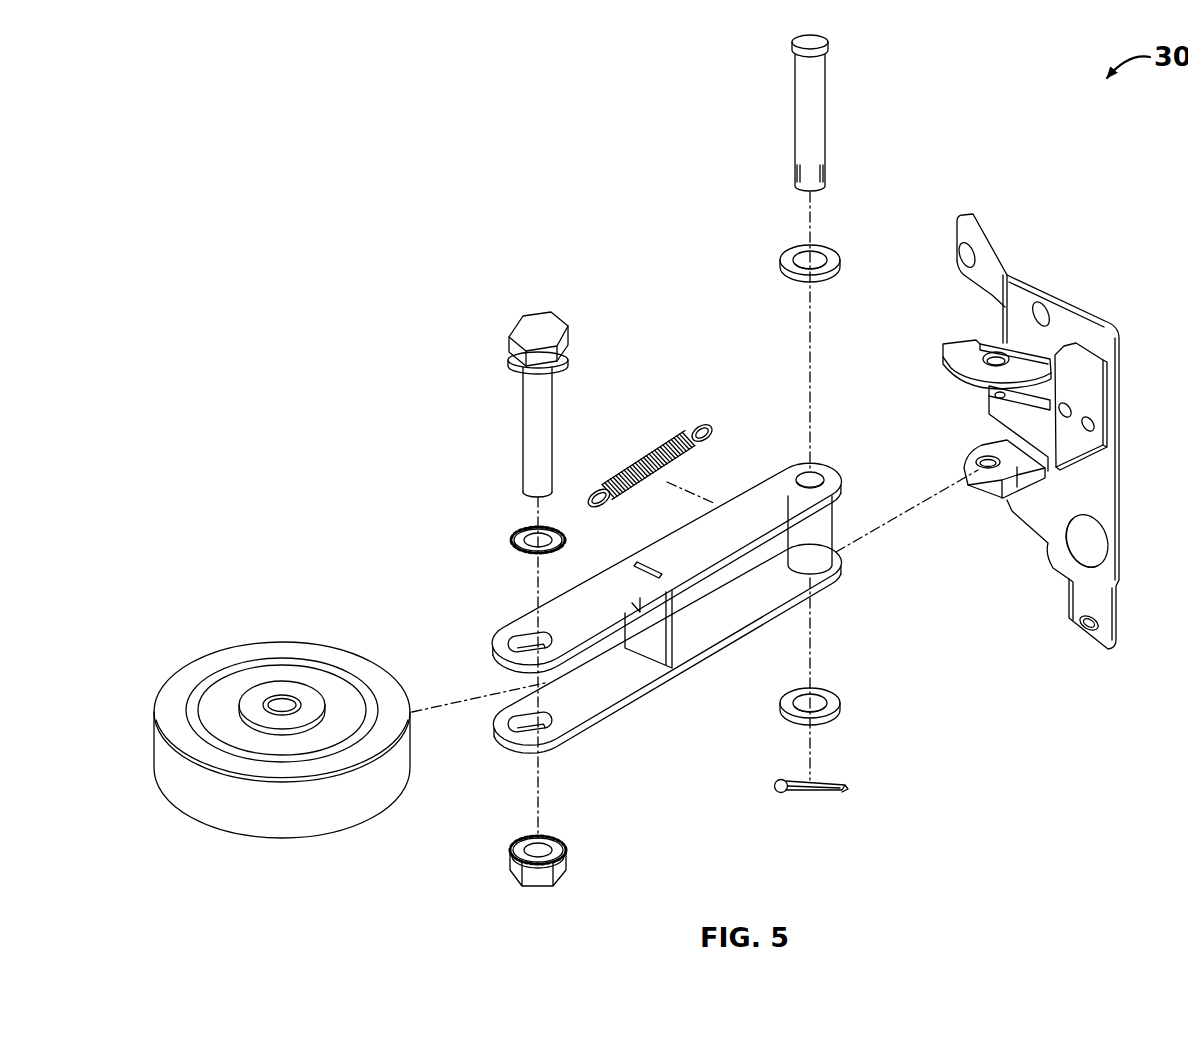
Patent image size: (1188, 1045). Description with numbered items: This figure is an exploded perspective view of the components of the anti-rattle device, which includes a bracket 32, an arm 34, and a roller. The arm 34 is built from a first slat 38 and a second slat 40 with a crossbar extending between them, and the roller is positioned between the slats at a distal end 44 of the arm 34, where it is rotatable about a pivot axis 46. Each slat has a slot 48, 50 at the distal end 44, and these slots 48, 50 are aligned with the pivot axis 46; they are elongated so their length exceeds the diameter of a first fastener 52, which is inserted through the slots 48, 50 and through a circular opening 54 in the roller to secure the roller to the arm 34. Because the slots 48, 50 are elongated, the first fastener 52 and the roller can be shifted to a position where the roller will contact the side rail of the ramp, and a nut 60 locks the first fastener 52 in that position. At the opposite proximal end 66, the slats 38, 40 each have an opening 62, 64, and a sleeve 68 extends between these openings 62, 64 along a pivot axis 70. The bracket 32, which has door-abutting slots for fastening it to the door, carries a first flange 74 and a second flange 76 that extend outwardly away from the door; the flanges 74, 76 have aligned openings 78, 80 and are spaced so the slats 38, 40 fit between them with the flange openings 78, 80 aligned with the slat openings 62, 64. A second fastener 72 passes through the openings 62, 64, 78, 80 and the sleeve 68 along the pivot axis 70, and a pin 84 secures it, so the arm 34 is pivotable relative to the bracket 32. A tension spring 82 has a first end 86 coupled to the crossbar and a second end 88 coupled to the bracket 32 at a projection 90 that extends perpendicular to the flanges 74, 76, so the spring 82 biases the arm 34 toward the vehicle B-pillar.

The bracket 32 is at (1024, 431).
The arm 34 is at (737, 607).
The first slat 38 is at (687, 642).
The second slat 40 is at (680, 548).
The distal end 44 is at (689, 556).
The pivot axis 46 is at (667, 675).
The slot 48 is at (527, 732).
The slot 50 is at (524, 638).
The first fastener 52 is at (545, 397).
The circular opening 54 is at (286, 697).
The nut 60 is at (566, 848).
The opening 62 is at (830, 590).
The opening 64 is at (818, 474).
The proximal end 66 is at (777, 483).
The sleeve 68 is at (823, 516).
The pivot axis 70 is at (826, 368).
The second fastener 72 is at (820, 78).
The first flange 74 is at (979, 496).
The second flange 76 is at (999, 303).
The opening 78 is at (984, 459).
The opening 80 is at (1000, 353).
The spring 82 is at (642, 436).
The pin 84 is at (823, 782).
The first end 86 is at (601, 489).
The second end 88 is at (686, 432).
The projection 90 is at (944, 368).